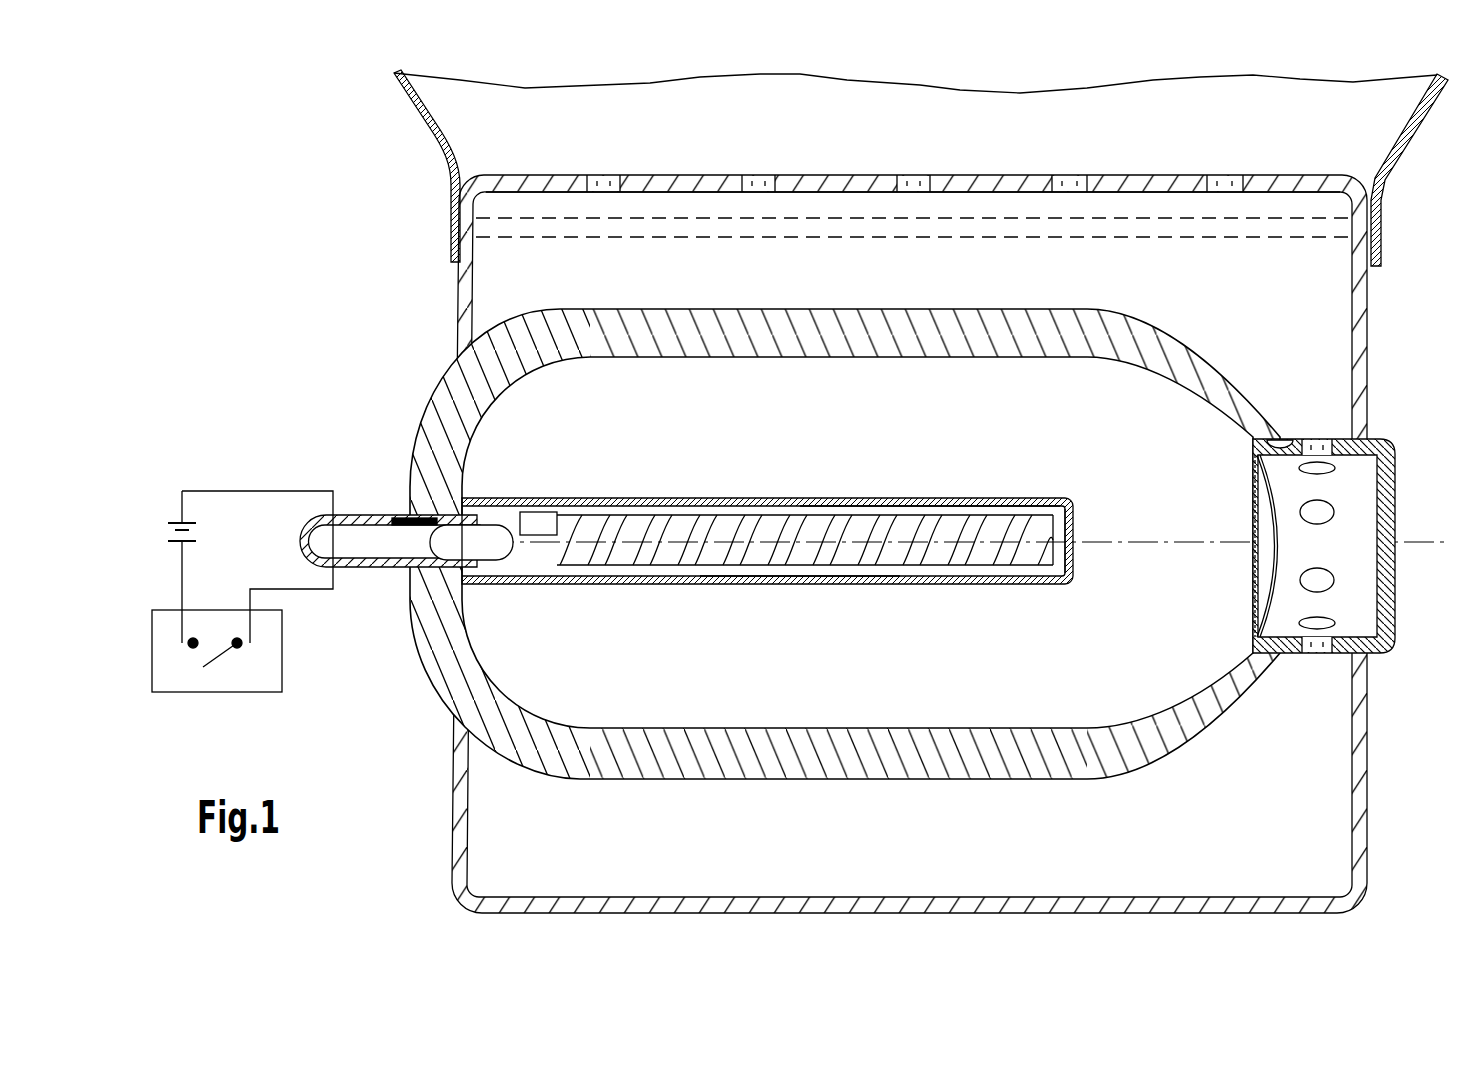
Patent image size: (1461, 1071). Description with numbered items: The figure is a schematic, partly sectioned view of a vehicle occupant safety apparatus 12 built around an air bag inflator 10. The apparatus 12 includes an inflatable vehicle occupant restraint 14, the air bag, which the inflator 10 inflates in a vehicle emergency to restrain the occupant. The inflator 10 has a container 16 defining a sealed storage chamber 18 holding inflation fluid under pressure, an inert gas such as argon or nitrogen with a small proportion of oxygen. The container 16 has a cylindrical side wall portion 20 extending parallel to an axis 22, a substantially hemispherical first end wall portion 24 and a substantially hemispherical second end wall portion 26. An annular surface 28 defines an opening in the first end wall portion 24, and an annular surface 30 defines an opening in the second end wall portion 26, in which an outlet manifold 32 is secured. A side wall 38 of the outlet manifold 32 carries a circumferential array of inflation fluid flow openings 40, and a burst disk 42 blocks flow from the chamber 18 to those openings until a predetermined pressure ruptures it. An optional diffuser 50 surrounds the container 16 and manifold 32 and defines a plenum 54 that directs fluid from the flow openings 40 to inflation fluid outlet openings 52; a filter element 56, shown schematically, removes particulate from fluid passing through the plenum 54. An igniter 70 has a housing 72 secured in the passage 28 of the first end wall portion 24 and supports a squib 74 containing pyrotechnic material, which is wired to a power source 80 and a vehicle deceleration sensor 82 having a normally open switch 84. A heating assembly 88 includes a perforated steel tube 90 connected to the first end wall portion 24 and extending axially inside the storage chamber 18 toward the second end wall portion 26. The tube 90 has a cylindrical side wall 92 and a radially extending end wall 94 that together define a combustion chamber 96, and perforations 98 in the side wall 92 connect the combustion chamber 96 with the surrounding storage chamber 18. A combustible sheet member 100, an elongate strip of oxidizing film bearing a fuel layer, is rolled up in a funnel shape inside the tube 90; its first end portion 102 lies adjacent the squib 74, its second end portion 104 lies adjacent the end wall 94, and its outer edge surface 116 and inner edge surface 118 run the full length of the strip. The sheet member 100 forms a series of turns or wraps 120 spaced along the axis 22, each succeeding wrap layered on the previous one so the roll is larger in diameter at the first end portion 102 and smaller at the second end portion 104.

The air bag inflator 10 is at (877, 519).
The vehicle occupant safety apparatus 12 is at (287, 208).
The inflatable vehicle occupant restraint 14 is at (847, 509).
The container 16 is at (877, 519).
The sealed storage chamber 18 is at (809, 528).
The cylindrical side wall portion 20 is at (876, 332).
The axis 22 is at (820, 541).
The first end wall portion 24 is at (437, 478).
The second end wall portion 26 is at (1210, 358).
The annular surface 28 is at (407, 527).
The annular surface 30 is at (1290, 440).
The outlet manifold 32 is at (1354, 549).
The side wall 38 is at (1358, 640).
The inflation fluid flow openings 40 is at (1320, 440).
The burst disk 42 is at (1272, 505).
The diffuser 50 is at (1302, 172).
The inflation fluid outlet openings 52 is at (905, 185).
The plenum 54 is at (1200, 294).
The filter element 56 is at (977, 230).
The igniter 70 is at (415, 563).
The housing 72 is at (372, 568).
The squib 74 is at (500, 545).
The power source 80 is at (170, 535).
The vehicle deceleration sensor 82 is at (187, 676).
The normally open switch 84 is at (218, 658).
The heating assembly 88 is at (820, 527).
The perforated steel tube 90 is at (789, 548).
The cylindrical side wall 92 is at (817, 583).
The end wall 94 is at (1077, 553).
The combustion chamber 96 is at (1013, 512).
The perforations 98 is at (673, 506).
The combustible sheet member 100 is at (885, 506).
The first end portion 102 is at (540, 520).
The second end portion 104 is at (1023, 520).
The first or outer edge surface 116 is at (723, 507).
The second or inner edge surface 118 is at (555, 568).
The turns or wraps 120 is at (773, 560).